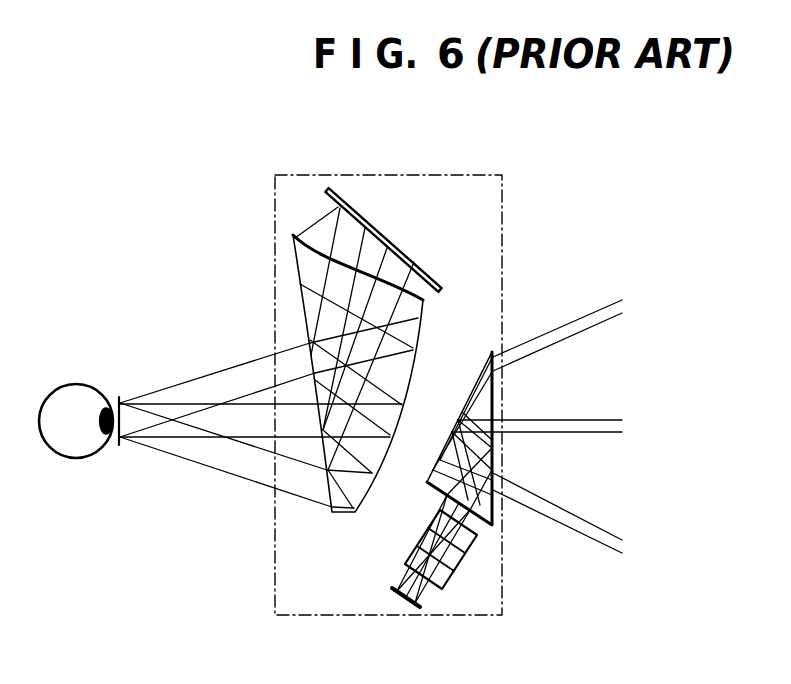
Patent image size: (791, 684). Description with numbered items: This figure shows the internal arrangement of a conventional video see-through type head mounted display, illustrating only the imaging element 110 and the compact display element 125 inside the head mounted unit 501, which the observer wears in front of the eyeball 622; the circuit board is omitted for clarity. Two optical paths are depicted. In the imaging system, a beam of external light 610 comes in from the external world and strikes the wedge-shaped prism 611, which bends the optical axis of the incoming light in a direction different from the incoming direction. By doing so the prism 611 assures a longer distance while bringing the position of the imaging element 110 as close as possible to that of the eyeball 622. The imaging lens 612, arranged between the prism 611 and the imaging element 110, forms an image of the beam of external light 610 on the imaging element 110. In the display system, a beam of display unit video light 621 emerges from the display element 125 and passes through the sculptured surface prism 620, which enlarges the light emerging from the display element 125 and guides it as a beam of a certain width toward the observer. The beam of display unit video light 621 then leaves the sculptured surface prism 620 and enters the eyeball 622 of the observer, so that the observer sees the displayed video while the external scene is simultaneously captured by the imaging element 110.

The imaging element 110 is at (393, 590).
The compact display element 125 is at (420, 282).
The head mounted unit 501 is at (504, 203).
The beam of external light 610 is at (600, 527).
The wedge-shaped prism 611 is at (462, 393).
The imaging lens 612 is at (462, 558).
The sculptured surface prism 620 is at (303, 299).
The beam of display unit video light 621 is at (210, 468).
The eyeball 622 is at (77, 459).